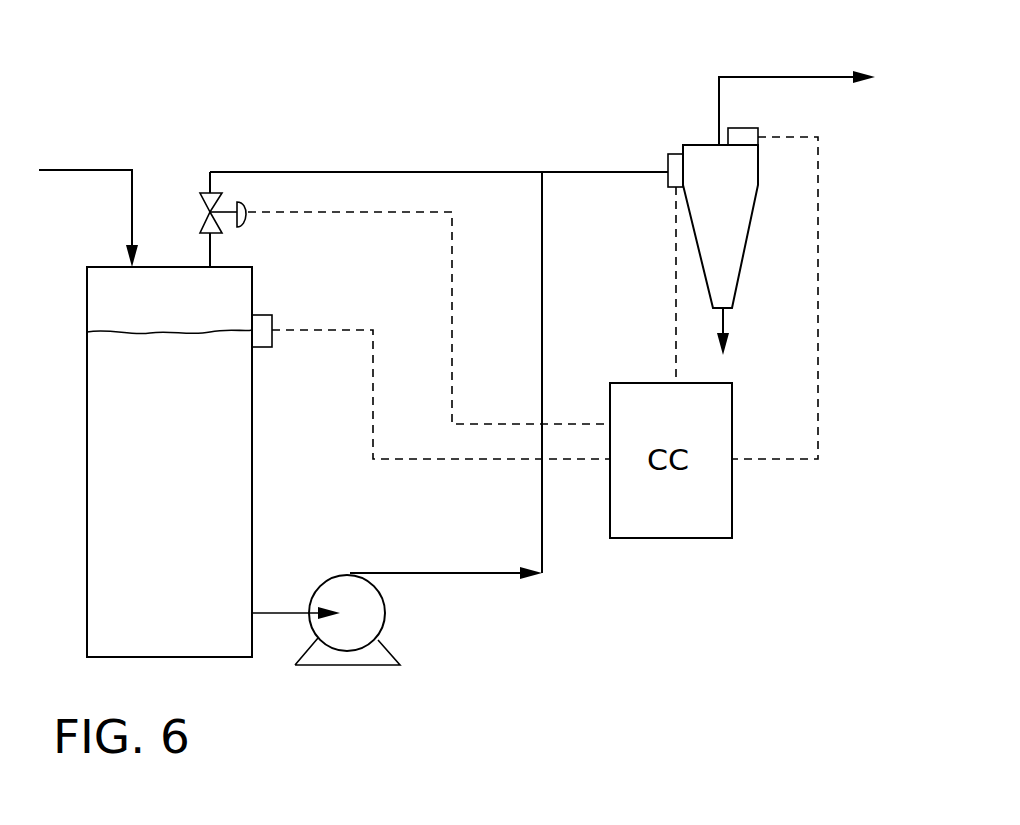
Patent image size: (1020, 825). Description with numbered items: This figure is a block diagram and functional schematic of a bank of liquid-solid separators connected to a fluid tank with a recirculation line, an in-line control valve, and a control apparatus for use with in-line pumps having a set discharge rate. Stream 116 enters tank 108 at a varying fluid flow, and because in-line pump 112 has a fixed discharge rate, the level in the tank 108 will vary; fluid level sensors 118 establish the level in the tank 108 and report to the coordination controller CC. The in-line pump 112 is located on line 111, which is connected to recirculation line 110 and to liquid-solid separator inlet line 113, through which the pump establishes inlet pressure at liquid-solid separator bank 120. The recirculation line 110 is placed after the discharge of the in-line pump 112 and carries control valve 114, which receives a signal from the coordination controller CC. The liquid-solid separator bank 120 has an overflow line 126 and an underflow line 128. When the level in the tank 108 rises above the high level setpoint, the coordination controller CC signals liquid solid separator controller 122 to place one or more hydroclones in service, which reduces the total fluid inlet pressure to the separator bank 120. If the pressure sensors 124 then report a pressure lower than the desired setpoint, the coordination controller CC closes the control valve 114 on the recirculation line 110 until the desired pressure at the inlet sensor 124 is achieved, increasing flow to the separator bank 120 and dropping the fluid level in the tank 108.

The tank 108 is at (252, 500).
The recirculation line 110 is at (482, 172).
The line 111 is at (542, 310).
The in-line pump 112 is at (383, 647).
The liquid-solid separator inlet line 113 is at (635, 172).
The control valve 114 is at (218, 196).
The stream 116 is at (97, 170).
The fluid level sensors 118 is at (272, 318).
The liquid-solid separator bank 120 is at (737, 258).
The liquid solid separator controller 122 is at (758, 135).
The pressure sensors 124 is at (668, 185).
The overflow line 126 is at (775, 77).
The underflow line 128 is at (723, 320).